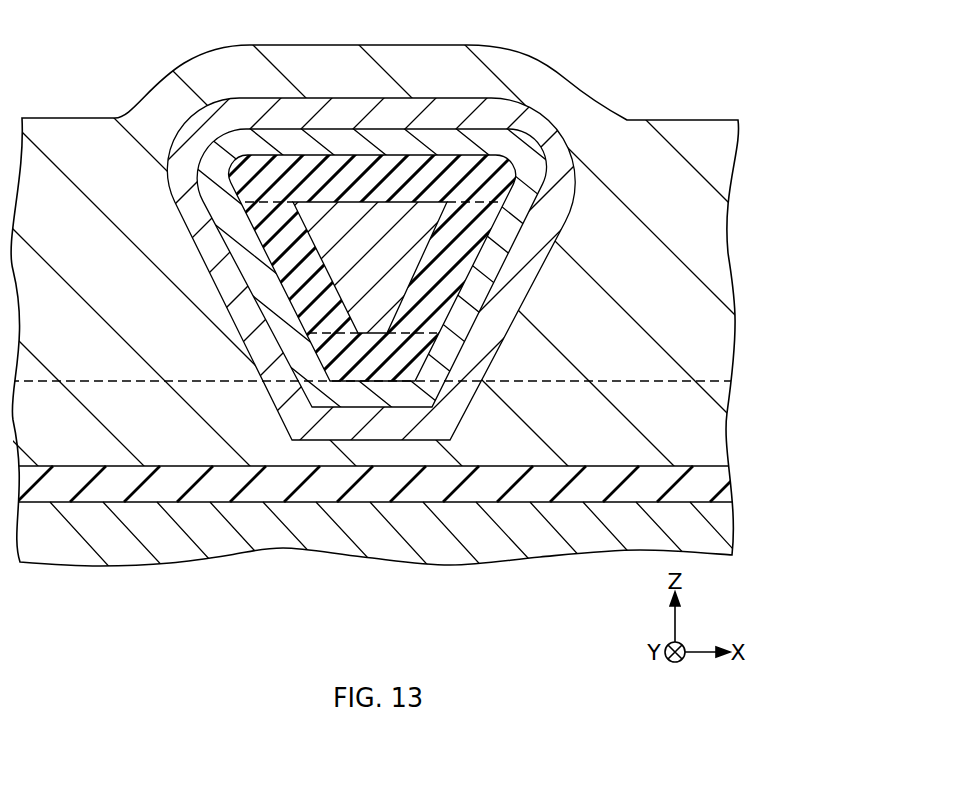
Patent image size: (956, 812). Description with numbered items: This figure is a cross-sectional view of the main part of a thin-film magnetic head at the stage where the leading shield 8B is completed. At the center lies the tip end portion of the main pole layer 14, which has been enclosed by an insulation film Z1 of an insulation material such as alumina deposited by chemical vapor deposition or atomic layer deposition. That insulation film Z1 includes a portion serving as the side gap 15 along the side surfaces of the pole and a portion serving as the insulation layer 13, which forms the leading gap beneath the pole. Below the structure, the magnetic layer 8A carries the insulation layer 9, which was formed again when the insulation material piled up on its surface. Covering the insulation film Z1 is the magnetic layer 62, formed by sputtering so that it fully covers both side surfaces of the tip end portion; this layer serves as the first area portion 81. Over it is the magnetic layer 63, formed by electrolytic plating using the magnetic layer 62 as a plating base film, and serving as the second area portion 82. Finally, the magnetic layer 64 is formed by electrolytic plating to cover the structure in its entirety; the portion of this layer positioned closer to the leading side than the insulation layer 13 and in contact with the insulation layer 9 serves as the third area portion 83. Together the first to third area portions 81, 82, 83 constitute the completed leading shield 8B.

The main pole layer 14 is at (368, 233).
The insulation film Z1 is at (418, 180).
The magnetic layer 64 is at (688, 127).
The magnetic layer 62 is at (495, 243).
The side gap 15 is at (455, 282).
The magnetic layer 63 is at (495, 323).
The insulation layer 9 is at (727, 477).
The magnetic layer 8A is at (728, 531).
The insulation layer 13 is at (358, 333).
The first area portion 81 is at (398, 390).
The second area portion 82 is at (441, 417).
The third area portion 83 is at (558, 428).
The leading shield 8B is at (575, 616).